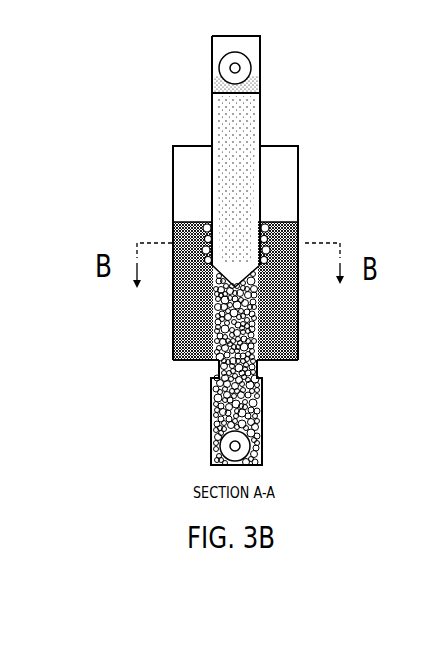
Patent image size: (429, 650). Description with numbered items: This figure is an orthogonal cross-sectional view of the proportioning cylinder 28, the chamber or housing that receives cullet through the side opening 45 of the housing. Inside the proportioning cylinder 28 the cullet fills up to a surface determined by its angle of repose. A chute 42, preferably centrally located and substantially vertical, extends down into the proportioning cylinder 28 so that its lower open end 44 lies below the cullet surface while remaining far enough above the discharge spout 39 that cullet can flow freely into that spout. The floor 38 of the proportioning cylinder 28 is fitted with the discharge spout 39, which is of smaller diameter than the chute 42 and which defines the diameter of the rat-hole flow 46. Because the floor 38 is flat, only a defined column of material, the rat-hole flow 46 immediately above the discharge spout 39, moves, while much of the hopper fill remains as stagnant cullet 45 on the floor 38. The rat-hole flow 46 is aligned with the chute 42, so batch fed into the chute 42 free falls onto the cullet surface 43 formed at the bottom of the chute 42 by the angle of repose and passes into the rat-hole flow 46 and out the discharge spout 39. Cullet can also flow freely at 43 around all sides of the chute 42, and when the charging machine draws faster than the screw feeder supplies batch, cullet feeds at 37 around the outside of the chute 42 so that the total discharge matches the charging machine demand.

The proportioning cylinder 28 is at (173, 293).
The cullet feed around the outside of chute 37 is at (298, 216).
The floor 38 is at (258, 365).
The discharge spout 39 is at (253, 373).
The chute 42 is at (212, 122).
The cullet surface at bottom of chute 43 is at (173, 242).
The lower open end of chute 44 is at (173, 313).
The stagnant cullet 45 is at (173, 362).
The rat-hole flow 46 is at (298, 327).